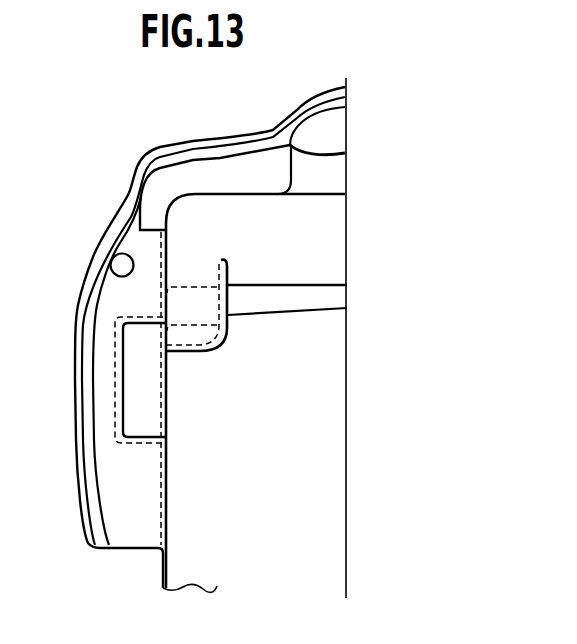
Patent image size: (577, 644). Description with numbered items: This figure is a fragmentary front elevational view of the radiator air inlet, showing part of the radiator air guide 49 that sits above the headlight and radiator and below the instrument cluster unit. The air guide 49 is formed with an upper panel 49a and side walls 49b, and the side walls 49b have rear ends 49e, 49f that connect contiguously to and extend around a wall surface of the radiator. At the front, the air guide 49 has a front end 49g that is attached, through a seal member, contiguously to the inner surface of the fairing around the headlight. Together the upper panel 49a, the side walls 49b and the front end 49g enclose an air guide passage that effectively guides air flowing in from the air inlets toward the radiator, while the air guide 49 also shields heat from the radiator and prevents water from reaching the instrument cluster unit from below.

The radiator air guide 49 is at (189, 137).
The upper panel 49a is at (242, 131).
The side wall 49b is at (167, 510).
The rear end 49e is at (290, 302).
The rear end 49f is at (168, 423).
The front end 49g is at (298, 103).